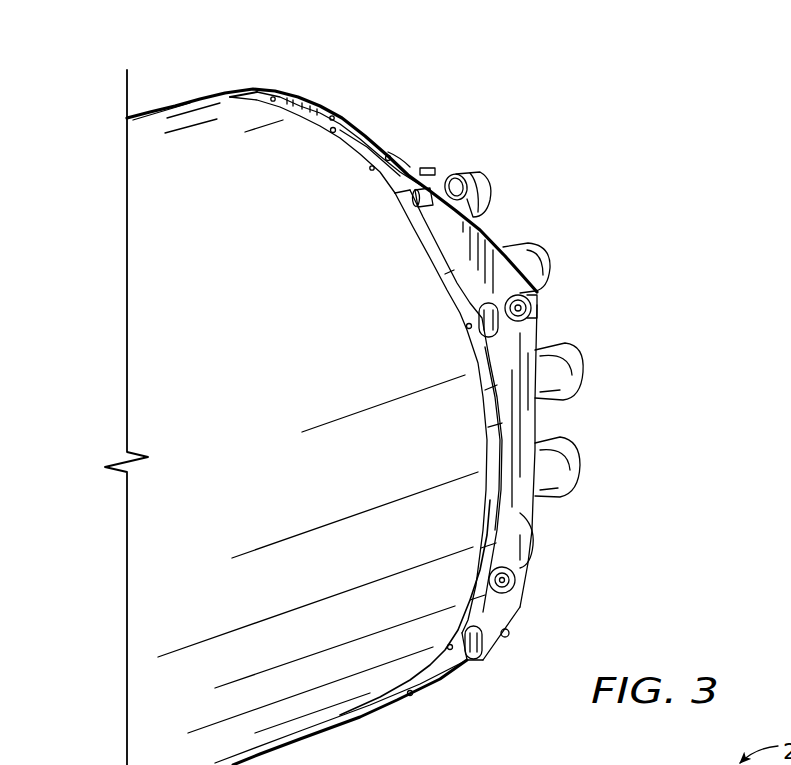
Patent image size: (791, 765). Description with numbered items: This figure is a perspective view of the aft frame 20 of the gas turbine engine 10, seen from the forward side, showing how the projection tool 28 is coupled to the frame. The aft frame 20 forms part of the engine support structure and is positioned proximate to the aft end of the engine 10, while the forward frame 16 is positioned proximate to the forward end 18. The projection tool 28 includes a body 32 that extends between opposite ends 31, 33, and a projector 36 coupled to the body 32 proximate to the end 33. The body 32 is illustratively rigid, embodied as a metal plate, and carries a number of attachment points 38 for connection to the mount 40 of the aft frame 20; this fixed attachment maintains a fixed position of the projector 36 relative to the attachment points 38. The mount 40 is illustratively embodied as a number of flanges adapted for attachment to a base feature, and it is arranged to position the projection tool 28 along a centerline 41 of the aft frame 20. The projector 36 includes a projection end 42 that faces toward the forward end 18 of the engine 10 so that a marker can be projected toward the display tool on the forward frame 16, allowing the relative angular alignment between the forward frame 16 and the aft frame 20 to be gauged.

The gas turbine engine 10 is at (494, 83).
The forward frame 16 is at (640, 240).
The forward end 18 is at (84, 283).
The aft frame 20 is at (314, 94).
The projection tool 28 is at (572, 320).
The end 31 is at (469, 672).
The body 32 is at (545, 422).
The end 33 is at (434, 160).
The projector 36 is at (460, 160).
The attachment points 38 is at (479, 301).
The mount 40 is at (465, 349).
The centerline 41 is at (398, 150).
The projection end 42 is at (400, 203).